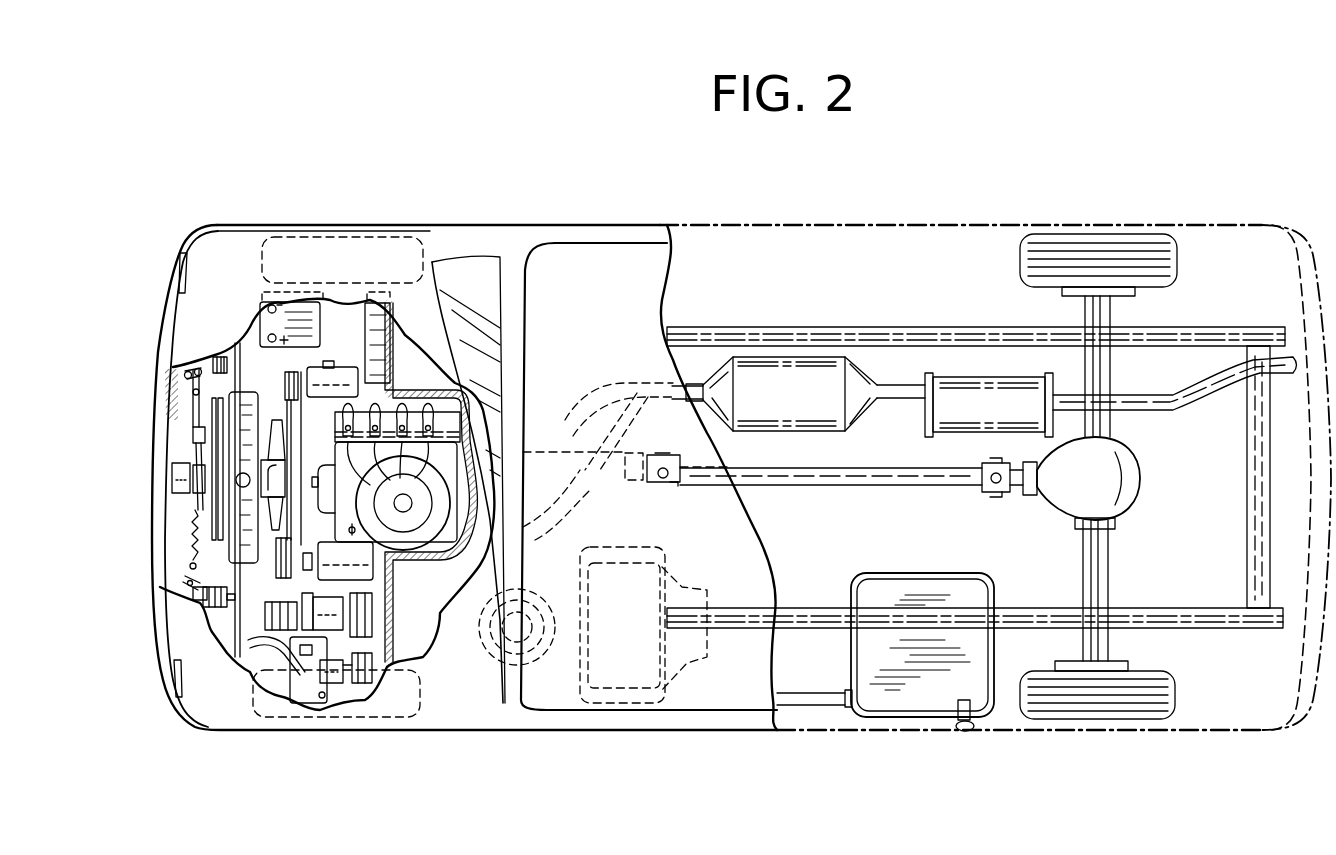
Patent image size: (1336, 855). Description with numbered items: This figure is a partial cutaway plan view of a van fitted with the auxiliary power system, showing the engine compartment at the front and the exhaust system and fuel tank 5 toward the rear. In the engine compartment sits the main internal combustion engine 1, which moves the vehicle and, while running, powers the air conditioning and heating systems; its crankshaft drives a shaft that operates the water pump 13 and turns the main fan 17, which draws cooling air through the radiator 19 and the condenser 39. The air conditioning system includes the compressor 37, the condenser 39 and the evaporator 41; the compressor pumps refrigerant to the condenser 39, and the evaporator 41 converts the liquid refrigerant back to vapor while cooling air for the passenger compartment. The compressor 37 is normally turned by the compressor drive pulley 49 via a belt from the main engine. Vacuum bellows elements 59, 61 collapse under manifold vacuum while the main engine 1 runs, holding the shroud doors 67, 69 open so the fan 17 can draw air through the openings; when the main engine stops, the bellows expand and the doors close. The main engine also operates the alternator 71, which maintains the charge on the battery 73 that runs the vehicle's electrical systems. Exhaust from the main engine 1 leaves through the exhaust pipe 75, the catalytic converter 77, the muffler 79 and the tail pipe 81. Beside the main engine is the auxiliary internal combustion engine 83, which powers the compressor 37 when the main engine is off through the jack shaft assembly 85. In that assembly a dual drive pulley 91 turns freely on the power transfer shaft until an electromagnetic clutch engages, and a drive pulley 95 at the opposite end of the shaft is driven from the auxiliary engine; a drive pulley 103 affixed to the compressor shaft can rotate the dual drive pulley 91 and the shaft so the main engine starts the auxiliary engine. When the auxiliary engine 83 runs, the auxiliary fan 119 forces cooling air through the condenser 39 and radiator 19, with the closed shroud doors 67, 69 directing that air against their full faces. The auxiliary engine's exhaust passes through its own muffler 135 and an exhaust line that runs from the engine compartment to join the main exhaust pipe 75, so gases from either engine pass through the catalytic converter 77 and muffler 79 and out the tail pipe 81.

The main internal combustion engine 1 is at (440, 465).
The fuel tank 5 is at (920, 700).
The water pump 13 is at (332, 465).
The main fan 17 is at (276, 419).
The radiator 19 is at (193, 407).
The compressor 37 is at (374, 560).
The condenser 39 is at (217, 450).
The evaporator 41 is at (377, 303).
The compressor drive pulley 49 is at (233, 650).
The vacuum bellows element 59 is at (207, 610).
The vacuum bellows element 61 is at (215, 358).
The shroud door 67 is at (192, 545).
The shroud door 69 is at (237, 413).
The alternator 71 is at (345, 366).
The battery 73 is at (296, 302).
The exhaust pipe 75 is at (692, 384).
The catalytic converter 77 is at (793, 358).
The muffler 79 is at (987, 400).
The tail pipe 81 is at (1173, 398).
The auxiliary internal combustion engine 83 is at (310, 700).
The jack shaft assembly 85 is at (325, 600).
The dual drive pulley 91 is at (265, 672).
The drive pulley 95 is at (373, 615).
The drive pulley 103 is at (277, 565).
The auxiliary fan 119 is at (180, 478).
The muffler 135 is at (565, 537).